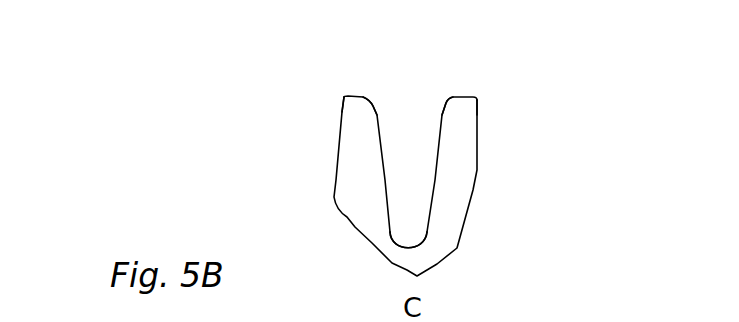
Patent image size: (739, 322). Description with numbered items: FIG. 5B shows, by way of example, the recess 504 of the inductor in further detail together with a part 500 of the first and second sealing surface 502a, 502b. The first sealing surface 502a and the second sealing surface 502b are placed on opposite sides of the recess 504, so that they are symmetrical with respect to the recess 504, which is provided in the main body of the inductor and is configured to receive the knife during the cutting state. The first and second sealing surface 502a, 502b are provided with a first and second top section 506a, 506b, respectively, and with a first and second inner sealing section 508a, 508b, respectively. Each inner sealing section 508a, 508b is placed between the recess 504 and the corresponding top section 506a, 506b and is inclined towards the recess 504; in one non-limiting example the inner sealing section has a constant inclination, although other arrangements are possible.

The part of the first and second sealing surface 500 is at (87, 133).
The first sealing surface 502a is at (522, 98).
The second sealing surface 502b is at (303, 116).
The recess 504 is at (408, 175).
The first top section 506a is at (478, 96).
The second top section 506b is at (344, 97).
The first inner sealing section 508a is at (453, 97).
The second inner sealing section 508b is at (363, 97).